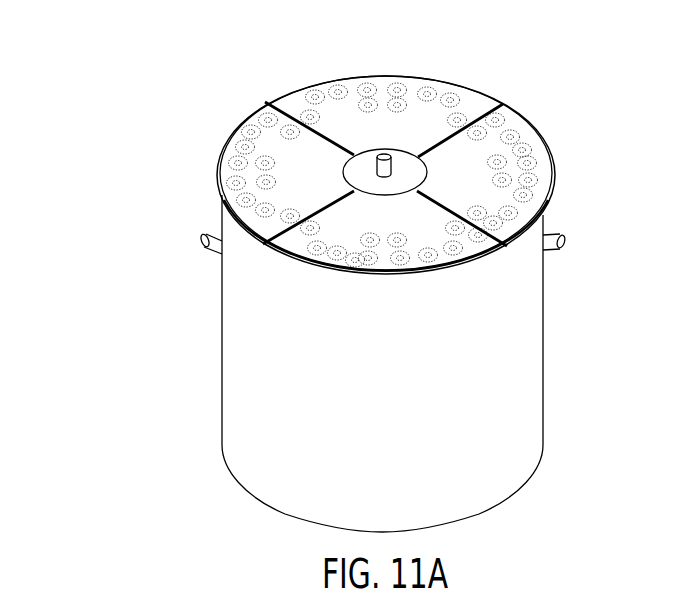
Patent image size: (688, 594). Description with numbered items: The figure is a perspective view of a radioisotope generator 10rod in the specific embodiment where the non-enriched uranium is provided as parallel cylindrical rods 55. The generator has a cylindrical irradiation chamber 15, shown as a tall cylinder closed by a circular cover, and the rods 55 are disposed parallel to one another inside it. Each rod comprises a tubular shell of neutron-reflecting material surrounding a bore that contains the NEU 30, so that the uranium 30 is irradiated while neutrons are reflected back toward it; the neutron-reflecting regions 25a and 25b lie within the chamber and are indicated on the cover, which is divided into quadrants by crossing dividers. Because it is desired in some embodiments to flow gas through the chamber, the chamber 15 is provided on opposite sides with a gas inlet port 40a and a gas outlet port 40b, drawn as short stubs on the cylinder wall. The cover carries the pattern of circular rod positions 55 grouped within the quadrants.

The radioisotope generator 10rod is at (160, 278).
The irradiation chamber 15 is at (518, 285).
The neutron reflecting region 25a is at (551, 171).
The neutron reflecting region 25b is at (480, 96).
The non-enriched uranium 30 is at (456, 88).
The gas inlet port 40a is at (212, 233).
The gas outlet port 40b is at (553, 232).
The rods 55 is at (429, 76).